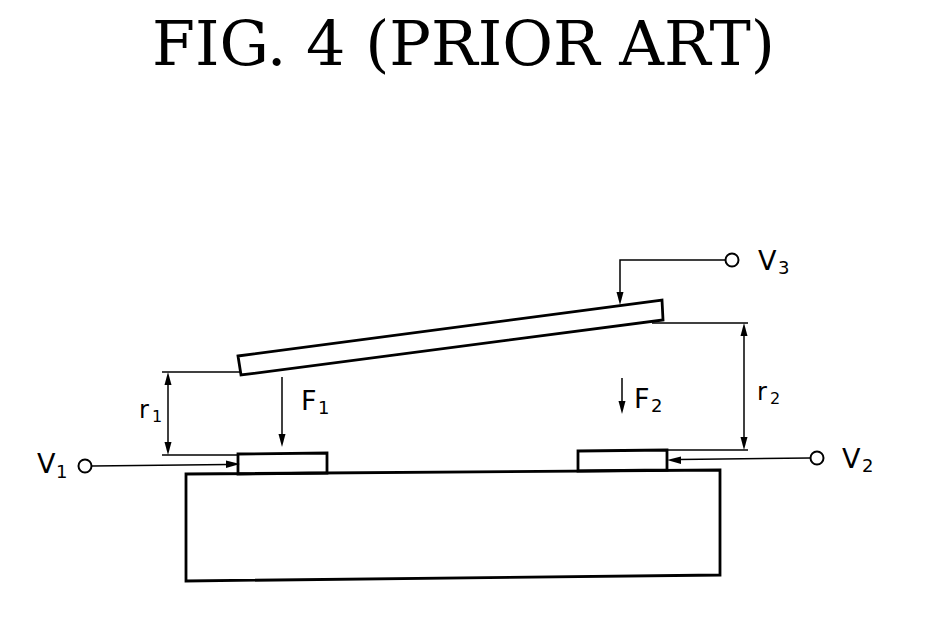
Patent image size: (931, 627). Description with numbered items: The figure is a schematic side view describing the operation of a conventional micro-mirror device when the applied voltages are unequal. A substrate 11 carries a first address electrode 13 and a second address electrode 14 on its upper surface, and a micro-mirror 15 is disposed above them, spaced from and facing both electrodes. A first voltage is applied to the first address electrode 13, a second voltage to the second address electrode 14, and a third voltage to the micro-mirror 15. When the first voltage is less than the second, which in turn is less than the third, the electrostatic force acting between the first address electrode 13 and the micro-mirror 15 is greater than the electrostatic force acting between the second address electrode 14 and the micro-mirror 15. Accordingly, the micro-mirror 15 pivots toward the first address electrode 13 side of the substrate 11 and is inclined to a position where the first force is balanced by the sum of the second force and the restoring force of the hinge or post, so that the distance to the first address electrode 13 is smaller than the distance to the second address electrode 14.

The substrate 11 is at (713, 527).
The first address electrode 13 is at (327, 463).
The second address electrode 14 is at (578, 462).
The micro-mirror 15 is at (510, 327).